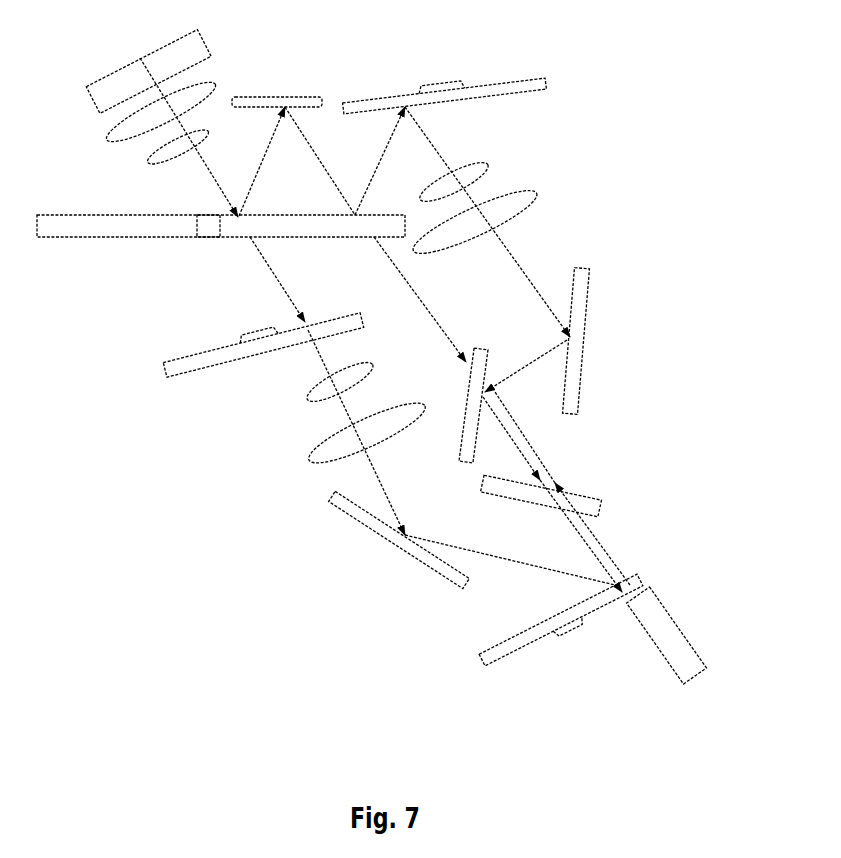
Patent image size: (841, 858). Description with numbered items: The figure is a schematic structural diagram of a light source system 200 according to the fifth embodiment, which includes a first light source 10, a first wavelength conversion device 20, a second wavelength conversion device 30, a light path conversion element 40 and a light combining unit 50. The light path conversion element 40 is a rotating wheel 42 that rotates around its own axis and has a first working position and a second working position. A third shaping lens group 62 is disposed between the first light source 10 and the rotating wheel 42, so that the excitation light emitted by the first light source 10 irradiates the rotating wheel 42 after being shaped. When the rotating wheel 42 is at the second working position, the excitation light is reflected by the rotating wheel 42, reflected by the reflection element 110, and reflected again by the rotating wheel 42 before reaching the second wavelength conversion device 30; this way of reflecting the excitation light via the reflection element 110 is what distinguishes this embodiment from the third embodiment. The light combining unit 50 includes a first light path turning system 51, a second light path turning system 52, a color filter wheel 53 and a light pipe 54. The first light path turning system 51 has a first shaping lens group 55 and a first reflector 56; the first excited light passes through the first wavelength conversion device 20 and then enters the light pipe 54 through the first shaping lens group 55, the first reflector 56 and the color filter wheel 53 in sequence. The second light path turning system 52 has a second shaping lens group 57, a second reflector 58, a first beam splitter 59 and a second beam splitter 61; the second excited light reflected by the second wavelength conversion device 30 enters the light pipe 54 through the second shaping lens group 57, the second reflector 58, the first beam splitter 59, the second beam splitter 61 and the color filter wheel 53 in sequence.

The light source system 200 is at (495, 31).
The first light source 10 is at (143, 72).
The third shaping lens group 62 is at (120, 153).
The reflection element 110 is at (305, 100).
The second wavelength conversion device 30 is at (522, 78).
The light path conversion element 40 is at (142, 230).
The rotating wheel 42 is at (165, 264).
The first wavelength conversion device 20 is at (212, 360).
The first light path turning system 51 is at (328, 530).
The first shaping lens group 55 is at (310, 425).
The first reflector 56 is at (388, 537).
The second light path turning system 52 is at (600, 250).
The second shaping lens group 57 is at (503, 180).
The second reflector 58 is at (582, 340).
The first beam splitter 59 is at (485, 353).
The second beam splitter 61 is at (587, 497).
The light combining unit 50 is at (590, 667).
The color filter wheel 53 is at (510, 643).
The light pipe 54 is at (660, 613).